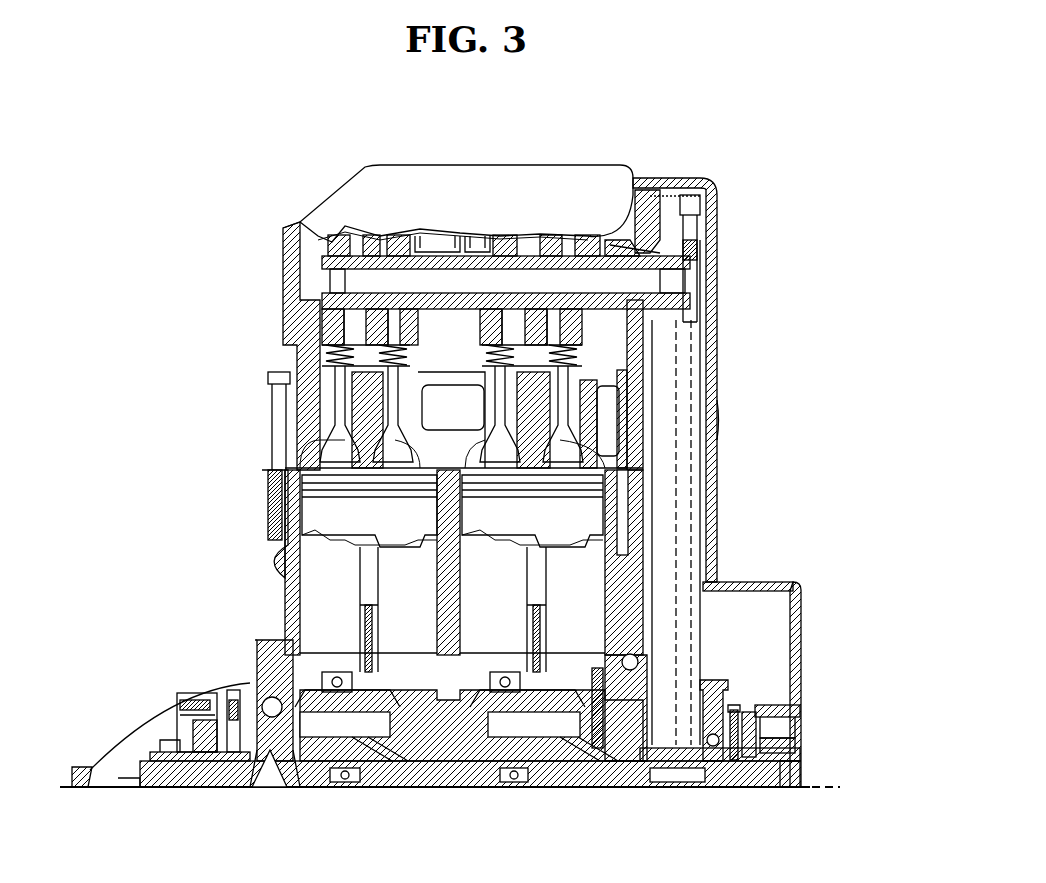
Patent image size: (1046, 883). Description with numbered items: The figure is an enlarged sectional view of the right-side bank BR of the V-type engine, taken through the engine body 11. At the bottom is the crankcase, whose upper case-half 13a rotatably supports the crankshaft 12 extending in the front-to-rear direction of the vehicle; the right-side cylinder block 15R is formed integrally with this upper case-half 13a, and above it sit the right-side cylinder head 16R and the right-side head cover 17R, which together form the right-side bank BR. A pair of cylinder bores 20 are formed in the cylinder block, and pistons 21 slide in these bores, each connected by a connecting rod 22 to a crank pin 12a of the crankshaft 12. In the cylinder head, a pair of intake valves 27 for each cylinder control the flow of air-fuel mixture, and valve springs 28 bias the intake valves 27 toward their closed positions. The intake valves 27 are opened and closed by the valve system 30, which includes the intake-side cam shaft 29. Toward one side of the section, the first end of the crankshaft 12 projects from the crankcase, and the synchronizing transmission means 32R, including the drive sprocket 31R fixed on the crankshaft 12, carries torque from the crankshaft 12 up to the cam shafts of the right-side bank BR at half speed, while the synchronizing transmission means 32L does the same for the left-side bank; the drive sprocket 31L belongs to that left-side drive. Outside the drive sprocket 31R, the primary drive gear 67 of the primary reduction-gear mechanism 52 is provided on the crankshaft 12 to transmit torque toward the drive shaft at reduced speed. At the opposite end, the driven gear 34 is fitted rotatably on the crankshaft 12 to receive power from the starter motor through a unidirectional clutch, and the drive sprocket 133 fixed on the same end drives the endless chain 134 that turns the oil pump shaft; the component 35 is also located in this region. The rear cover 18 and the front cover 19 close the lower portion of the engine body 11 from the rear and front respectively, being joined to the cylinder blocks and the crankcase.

The right-side head cover 17R is at (613, 168).
The right-side cylinder head 16R is at (717, 297).
The right-side bank BR is at (718, 395).
The valve system 30 is at (446, 250).
The intake-side cam shaft 29 is at (471, 250).
The valve spring 28 is at (328, 355).
The intake valve 27 is at (288, 432).
The right-side cylinder block 15R is at (285, 577).
The cylinder bore 20 is at (643, 547).
The front cover 19 is at (757, 582).
The piston 21 is at (337, 537).
The connecting rod 22 is at (368, 588).
The crank pin 12a is at (382, 668).
The crankshaft 12 is at (447, 789).
The engine body 11 is at (256, 660).
The upper case-half 13a is at (270, 742).
The driven gear 34 is at (252, 676).
The starter motor 35 is at (176, 736).
The drive sprocket 133 is at (167, 750).
The endless chain 134 is at (166, 752).
The rear cover 18 is at (85, 766).
The synchronizing transmission means 32R is at (727, 618).
The synchronizing transmission means 32L is at (670, 706).
The sprocket left 31L is at (657, 789).
The drive sprocket 31R is at (727, 702).
The primary drive gear 67 is at (733, 700).
The primary reduction-gear mechanism 52 is at (735, 686).